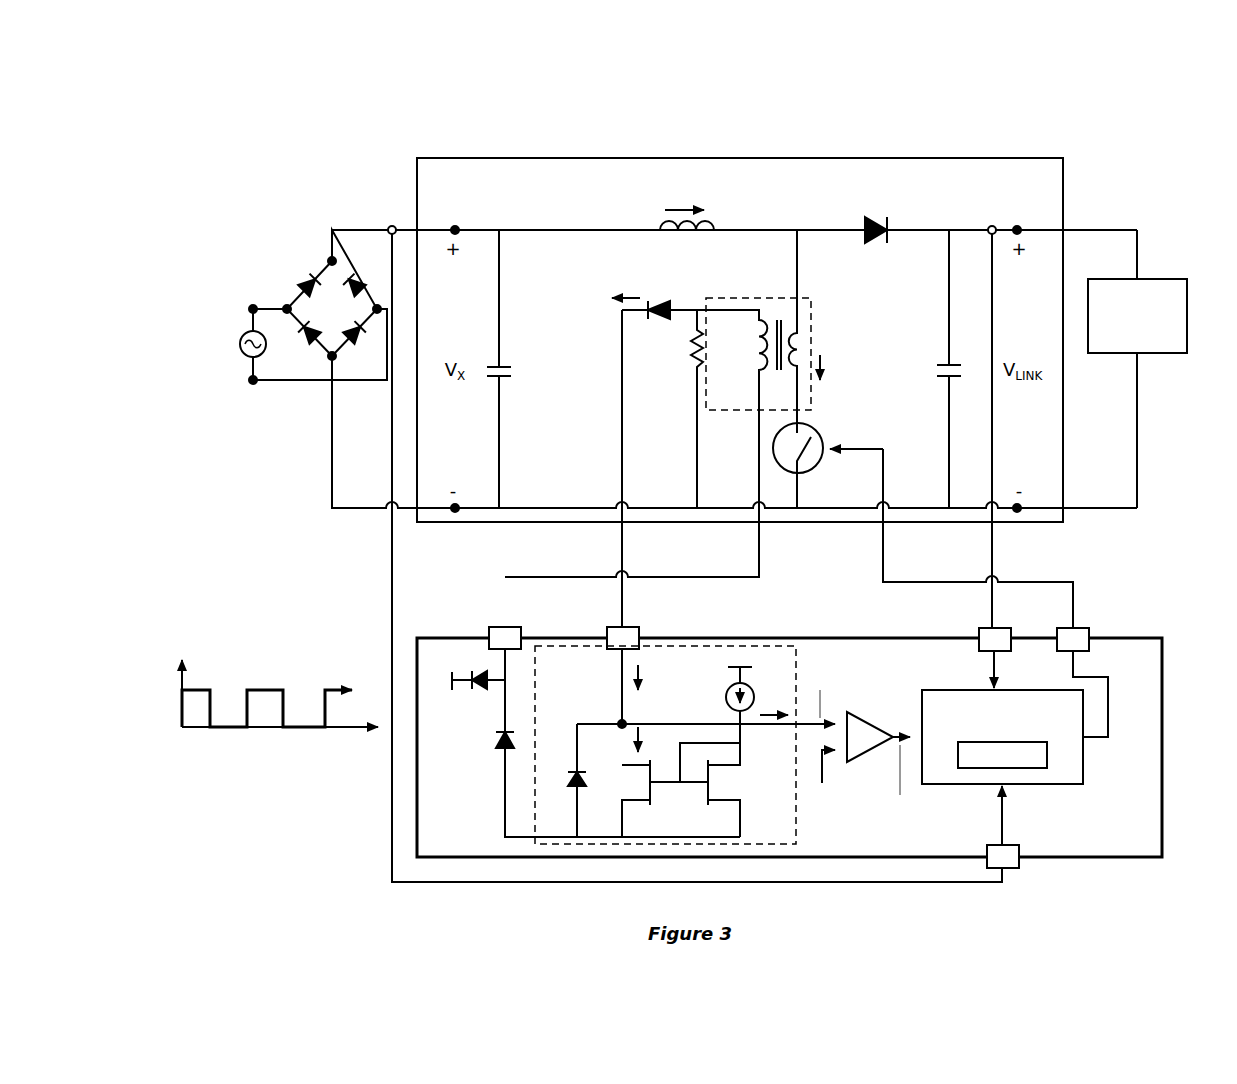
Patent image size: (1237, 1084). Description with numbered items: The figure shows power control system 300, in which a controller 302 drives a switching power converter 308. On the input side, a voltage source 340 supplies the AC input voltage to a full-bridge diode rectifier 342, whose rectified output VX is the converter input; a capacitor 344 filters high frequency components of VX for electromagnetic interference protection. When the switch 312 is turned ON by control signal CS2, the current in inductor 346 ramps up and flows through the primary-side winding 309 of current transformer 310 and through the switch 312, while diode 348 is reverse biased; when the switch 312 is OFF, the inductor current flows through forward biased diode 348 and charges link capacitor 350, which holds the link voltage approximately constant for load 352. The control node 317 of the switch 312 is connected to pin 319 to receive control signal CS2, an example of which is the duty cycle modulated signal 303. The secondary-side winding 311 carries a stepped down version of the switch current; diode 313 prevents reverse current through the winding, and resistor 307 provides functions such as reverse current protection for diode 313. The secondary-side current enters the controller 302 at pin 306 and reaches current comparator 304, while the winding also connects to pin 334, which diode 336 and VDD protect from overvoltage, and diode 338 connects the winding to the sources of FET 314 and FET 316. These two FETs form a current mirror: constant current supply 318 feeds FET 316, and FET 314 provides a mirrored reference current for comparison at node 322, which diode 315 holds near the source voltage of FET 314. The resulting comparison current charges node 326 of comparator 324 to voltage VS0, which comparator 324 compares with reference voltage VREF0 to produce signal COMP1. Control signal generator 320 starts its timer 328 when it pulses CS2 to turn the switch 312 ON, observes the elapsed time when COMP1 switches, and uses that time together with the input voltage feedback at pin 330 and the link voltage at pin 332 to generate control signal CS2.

The power control system 300 is at (1142, 193).
The controller 302 is at (797, 638).
The signal 303 is at (370, 672).
The current comparator 304 is at (694, 744).
The pin 306 is at (607, 638).
The resistor 307 is at (697, 369).
The switching power converter 308 is at (626, 158).
The primary-side winding 309 is at (798, 352).
The current transformer 310 is at (679, 403).
The secondary-side winding 311 is at (759, 372).
The switch 312 is at (812, 430).
The diode 313 is at (660, 303).
The FET 314 is at (642, 796).
The diode 315 is at (568, 788).
The FET 316 is at (716, 796).
The control node 317 is at (826, 453).
The constant current supply 318 is at (753, 690).
The pin 319 is at (1089, 638).
The control signal generator 320 is at (1014, 761).
The node 322 is at (617, 722).
The comparator 324 is at (866, 712).
The node 326 is at (822, 722).
The timer 328 is at (1010, 769).
The pin 330 is at (1019, 868).
The pin 332 is at (979, 638).
The pin 334 is at (492, 627).
The diode 336 is at (482, 690).
The diode 338 is at (496, 742).
The voltage source 340 is at (241, 356).
The full-bridge diode rectifier 342 is at (318, 319).
The capacitor 344 is at (499, 367).
The inductor 346 is at (663, 229).
The diode 348 is at (879, 216).
The link capacitor 350 is at (949, 366).
The load 352 is at (1168, 279).